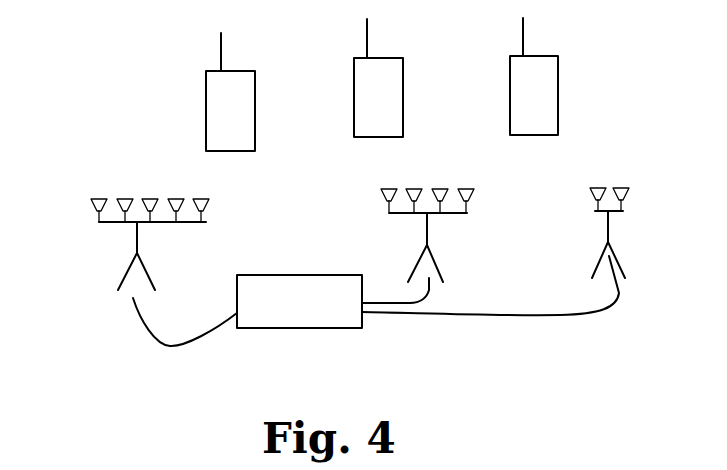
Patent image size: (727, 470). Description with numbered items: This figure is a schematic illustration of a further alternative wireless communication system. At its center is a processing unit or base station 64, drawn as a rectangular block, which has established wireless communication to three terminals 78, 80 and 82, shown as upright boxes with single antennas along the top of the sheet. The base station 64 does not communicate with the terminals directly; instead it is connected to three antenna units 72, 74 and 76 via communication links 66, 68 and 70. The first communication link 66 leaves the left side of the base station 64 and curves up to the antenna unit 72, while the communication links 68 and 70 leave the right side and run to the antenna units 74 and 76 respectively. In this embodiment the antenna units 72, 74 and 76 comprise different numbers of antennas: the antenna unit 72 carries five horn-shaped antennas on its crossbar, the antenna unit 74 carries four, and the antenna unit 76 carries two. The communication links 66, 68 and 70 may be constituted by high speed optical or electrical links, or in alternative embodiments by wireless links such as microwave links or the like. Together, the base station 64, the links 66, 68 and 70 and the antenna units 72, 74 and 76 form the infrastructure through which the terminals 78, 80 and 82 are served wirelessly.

The processing unit or base station 64 is at (320, 328).
The communication link 66 is at (150, 340).
The communication link 68 is at (433, 302).
The communication link 70 is at (495, 322).
The antenna unit 72 is at (130, 240).
The antenna unit 74 is at (478, 204).
The antenna unit 76 is at (594, 219).
The terminal 78 is at (247, 110).
The terminal 80 is at (395, 97).
The terminal 82 is at (550, 96).